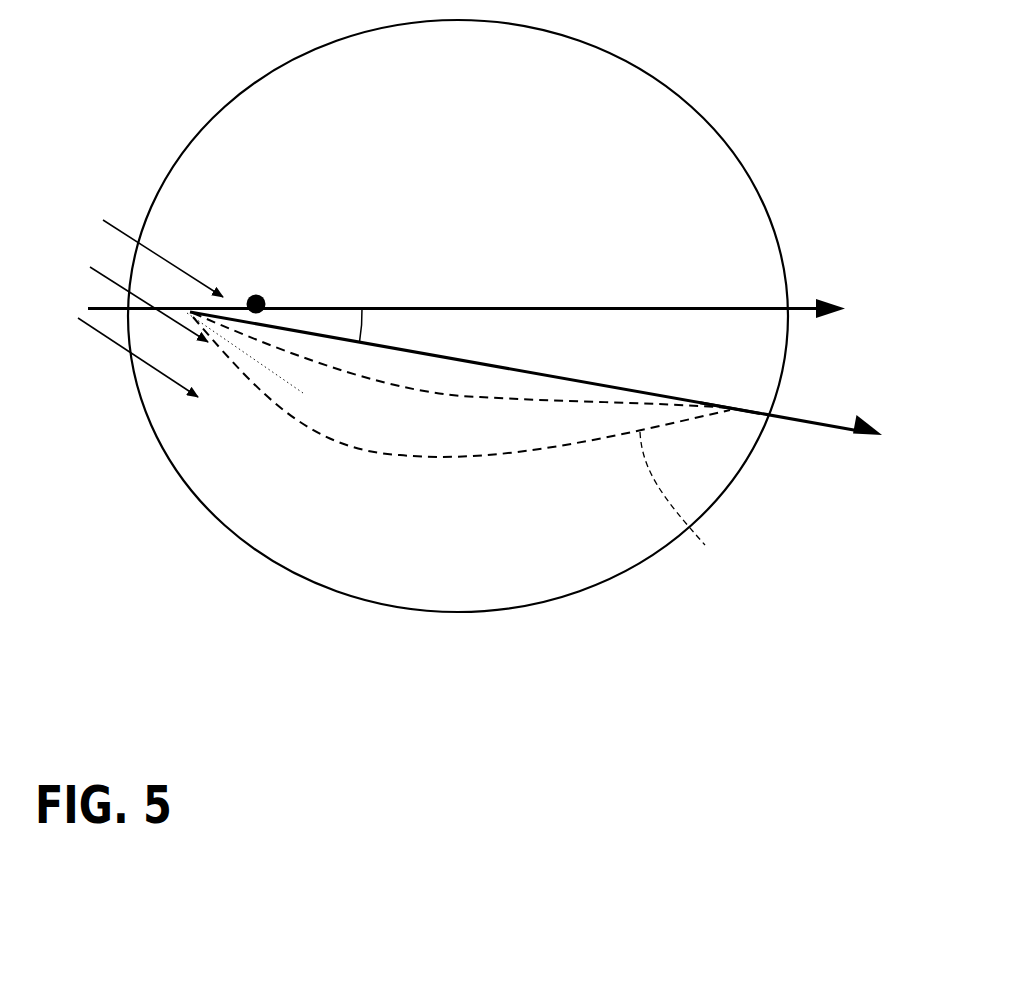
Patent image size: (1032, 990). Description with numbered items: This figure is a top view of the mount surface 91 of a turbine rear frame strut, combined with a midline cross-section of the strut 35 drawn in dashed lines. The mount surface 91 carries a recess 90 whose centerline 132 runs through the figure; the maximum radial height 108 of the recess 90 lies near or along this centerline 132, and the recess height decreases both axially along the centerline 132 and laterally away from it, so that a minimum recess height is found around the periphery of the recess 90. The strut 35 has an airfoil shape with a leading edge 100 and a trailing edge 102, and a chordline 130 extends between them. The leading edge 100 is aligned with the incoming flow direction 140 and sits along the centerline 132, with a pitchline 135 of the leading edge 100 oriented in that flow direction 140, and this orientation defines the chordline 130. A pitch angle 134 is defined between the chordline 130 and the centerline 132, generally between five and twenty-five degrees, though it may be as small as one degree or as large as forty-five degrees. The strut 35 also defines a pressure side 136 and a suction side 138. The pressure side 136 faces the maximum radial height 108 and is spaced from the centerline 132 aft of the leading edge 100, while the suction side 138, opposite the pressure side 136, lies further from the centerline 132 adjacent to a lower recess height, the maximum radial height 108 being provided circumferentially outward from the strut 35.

The strut 35 is at (691, 503).
The recess 90 is at (458, 316).
The mount surface 91 is at (723, 143).
The leading edge 100 is at (190, 313).
The trailing edge 102 is at (735, 408).
The maximum radial height 108 is at (256, 293).
The chordline 130 is at (783, 420).
The centerline 132 is at (802, 305).
The pitch angle 134 is at (370, 330).
The pitchline 135 is at (277, 380).
The pressure side 136 is at (493, 397).
The suction side 138 is at (480, 453).
The incoming flow direction 140 is at (103, 218).